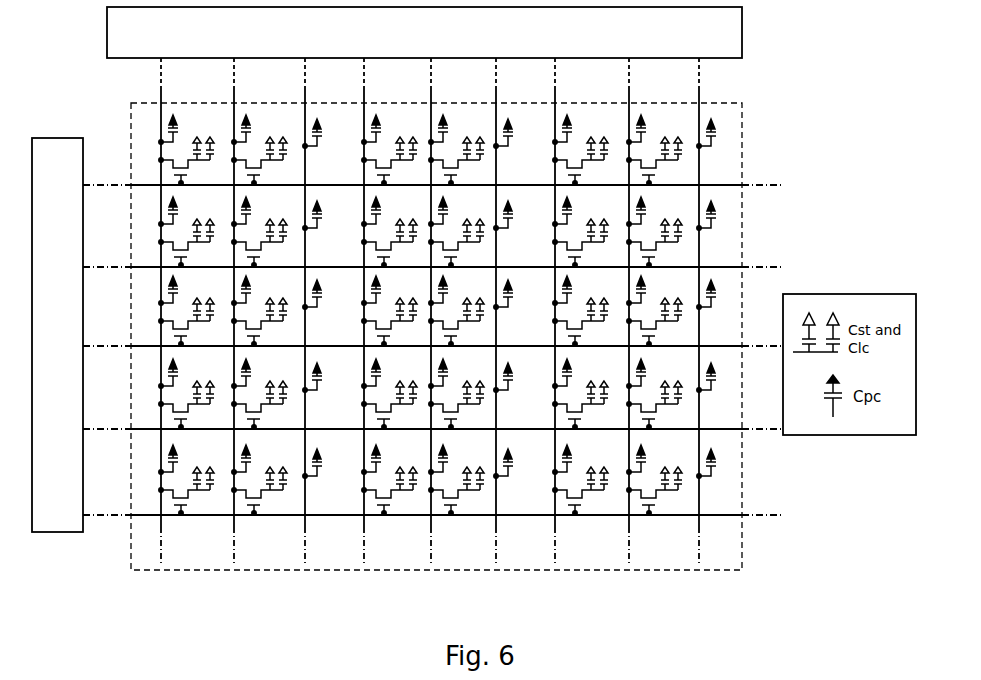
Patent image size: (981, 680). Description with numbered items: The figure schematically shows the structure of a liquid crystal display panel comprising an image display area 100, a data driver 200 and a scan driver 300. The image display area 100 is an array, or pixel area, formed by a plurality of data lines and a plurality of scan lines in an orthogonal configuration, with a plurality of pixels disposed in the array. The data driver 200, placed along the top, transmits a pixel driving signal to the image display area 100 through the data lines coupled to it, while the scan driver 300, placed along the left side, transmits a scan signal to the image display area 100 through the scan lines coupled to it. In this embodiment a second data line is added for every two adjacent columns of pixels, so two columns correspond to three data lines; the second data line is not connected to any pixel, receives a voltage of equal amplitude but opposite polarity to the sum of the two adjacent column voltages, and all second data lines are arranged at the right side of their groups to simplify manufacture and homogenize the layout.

The image display area 100 is at (743, 130).
The data driver 200 is at (424, 32).
The scan driver 300 is at (57, 335).